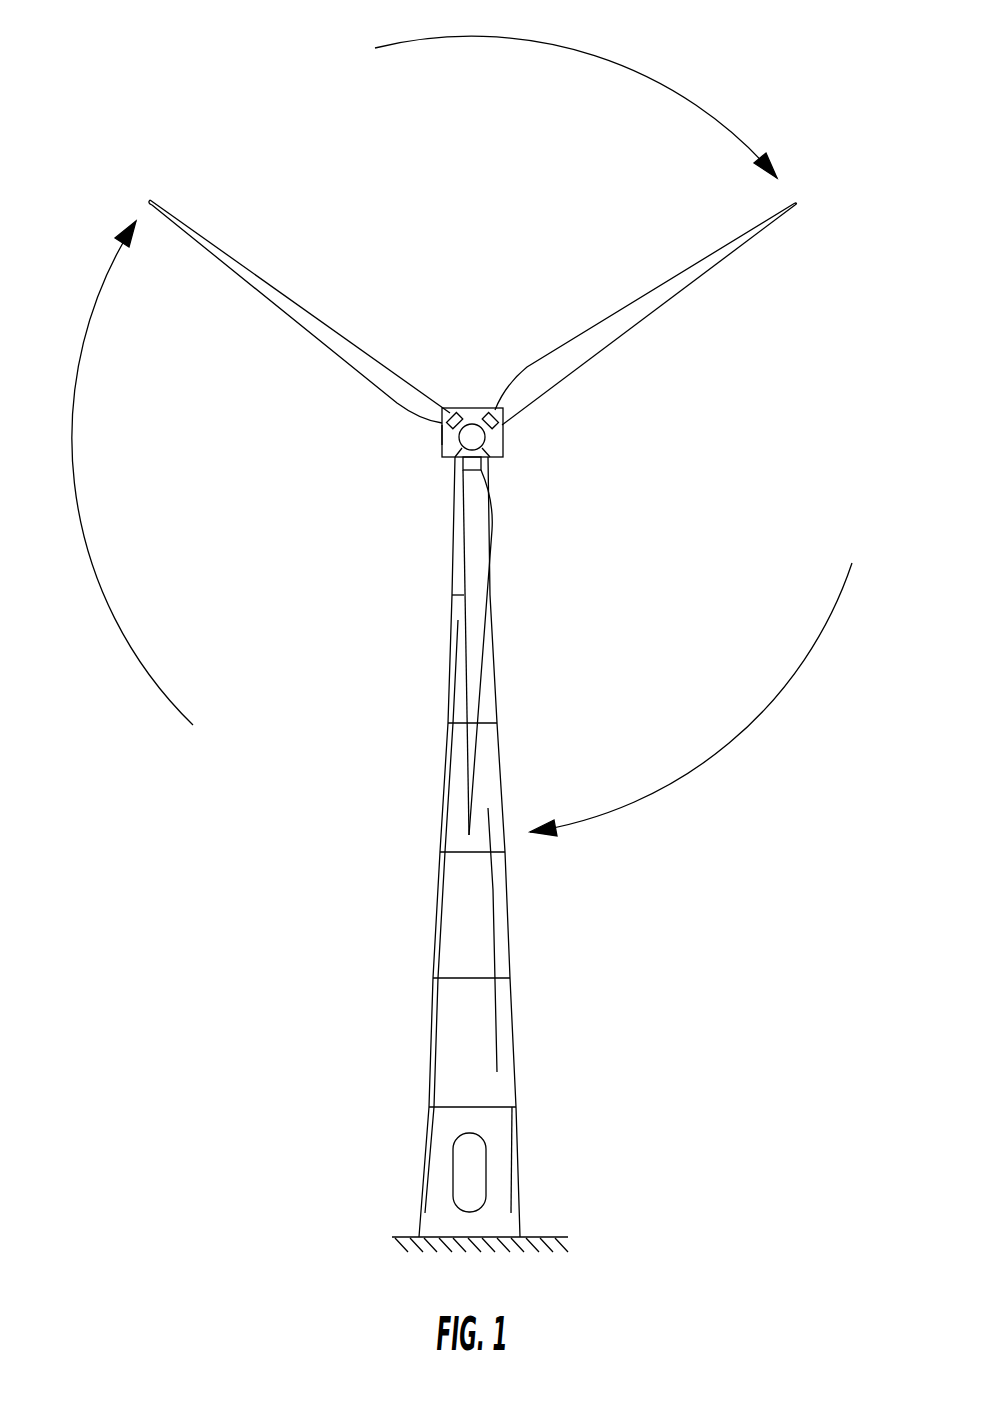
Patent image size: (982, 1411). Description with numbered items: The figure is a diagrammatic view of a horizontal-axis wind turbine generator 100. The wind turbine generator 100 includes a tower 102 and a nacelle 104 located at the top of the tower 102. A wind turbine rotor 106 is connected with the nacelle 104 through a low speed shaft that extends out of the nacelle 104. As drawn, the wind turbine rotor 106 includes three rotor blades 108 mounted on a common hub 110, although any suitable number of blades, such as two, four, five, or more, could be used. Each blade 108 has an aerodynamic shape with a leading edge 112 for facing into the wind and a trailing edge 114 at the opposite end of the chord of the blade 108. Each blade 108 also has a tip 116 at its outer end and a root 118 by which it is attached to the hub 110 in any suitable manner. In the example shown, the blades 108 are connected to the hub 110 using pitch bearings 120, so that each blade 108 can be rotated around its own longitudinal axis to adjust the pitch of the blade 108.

The horizontal-axis wind turbine generator 100 is at (523, 1052).
The tower 102 is at (448, 923).
The nacelle 104 is at (443, 458).
The wind turbine rotor 106 is at (532, 428).
The rotor blade 108 is at (353, 355).
The hub 110 is at (472, 437).
The leading edge 112 is at (285, 293).
The trailing edge 114 is at (280, 312).
The tip 116 is at (143, 198).
The root 118 is at (430, 428).
The pitch bearing 120 is at (460, 423).